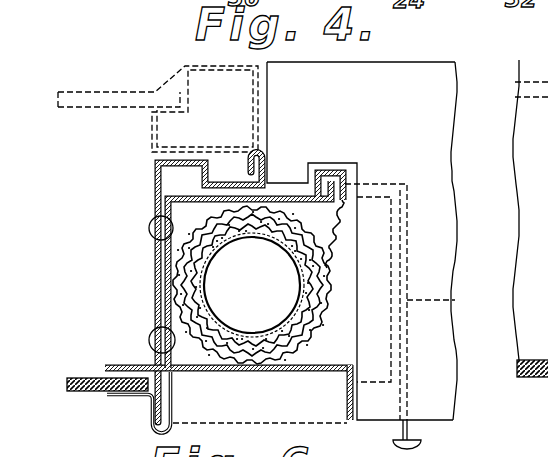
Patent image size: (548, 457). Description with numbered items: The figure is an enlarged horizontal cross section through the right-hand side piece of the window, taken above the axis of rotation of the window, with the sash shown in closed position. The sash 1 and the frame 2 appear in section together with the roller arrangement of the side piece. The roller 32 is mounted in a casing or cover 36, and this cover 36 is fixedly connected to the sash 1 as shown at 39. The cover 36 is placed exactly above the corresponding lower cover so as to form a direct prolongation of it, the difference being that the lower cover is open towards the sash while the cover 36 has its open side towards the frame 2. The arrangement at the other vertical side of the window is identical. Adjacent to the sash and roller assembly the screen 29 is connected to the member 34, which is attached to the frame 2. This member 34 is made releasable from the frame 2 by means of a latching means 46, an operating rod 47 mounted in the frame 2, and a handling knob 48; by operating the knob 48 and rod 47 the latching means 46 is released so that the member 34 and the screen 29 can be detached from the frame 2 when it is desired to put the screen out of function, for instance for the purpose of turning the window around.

The sash 1 is at (154, 280).
The frame 2 is at (348, 72).
The screen 29 is at (332, 248).
The roller 32 is at (248, 358).
The member 34 is at (340, 168).
The cover 36 is at (326, 372).
The fixed connection 39 is at (149, 228).
The latching means 46 is at (387, 183).
The operating rod 47 is at (460, 292).
The handling knob 48 is at (419, 446).